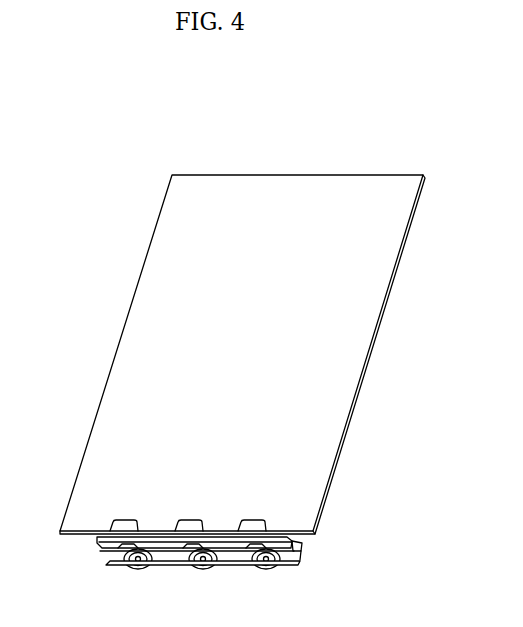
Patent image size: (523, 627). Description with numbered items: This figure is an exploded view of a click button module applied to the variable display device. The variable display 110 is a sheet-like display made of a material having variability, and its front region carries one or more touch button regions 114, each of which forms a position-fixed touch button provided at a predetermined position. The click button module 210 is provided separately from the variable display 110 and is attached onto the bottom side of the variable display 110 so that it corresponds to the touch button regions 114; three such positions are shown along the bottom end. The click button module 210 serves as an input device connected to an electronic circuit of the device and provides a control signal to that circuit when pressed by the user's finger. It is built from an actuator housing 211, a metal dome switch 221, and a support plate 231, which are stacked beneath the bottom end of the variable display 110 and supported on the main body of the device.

The variable display 110 is at (389, 318).
The touch button region 114 is at (184, 529).
The click button module 210 is at (194, 567).
The actuator housing 211 is at (296, 538).
The metal dome switch 221 is at (303, 547).
The support plate 231 is at (293, 563).